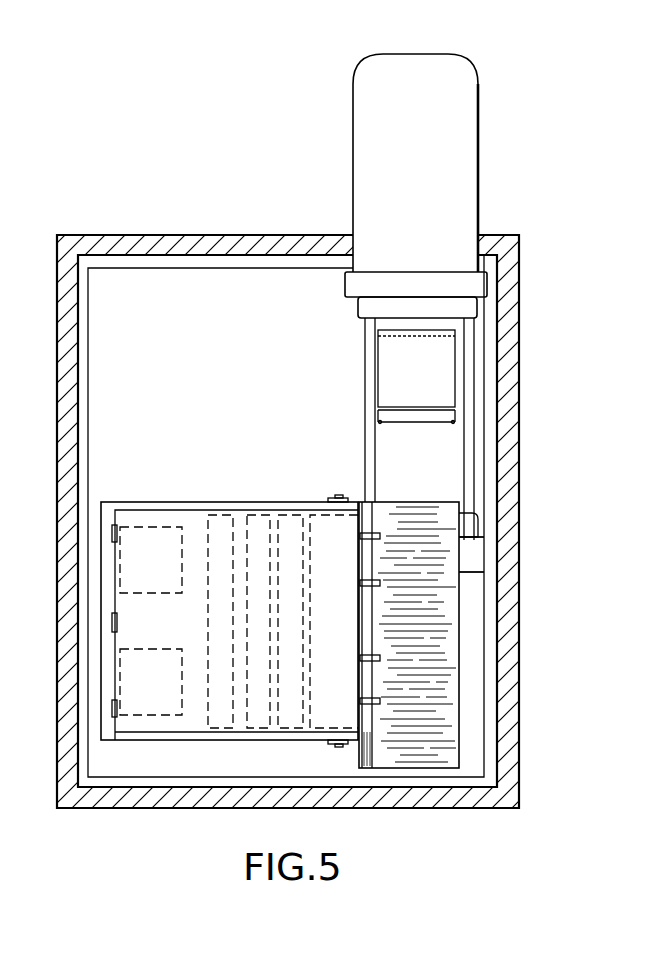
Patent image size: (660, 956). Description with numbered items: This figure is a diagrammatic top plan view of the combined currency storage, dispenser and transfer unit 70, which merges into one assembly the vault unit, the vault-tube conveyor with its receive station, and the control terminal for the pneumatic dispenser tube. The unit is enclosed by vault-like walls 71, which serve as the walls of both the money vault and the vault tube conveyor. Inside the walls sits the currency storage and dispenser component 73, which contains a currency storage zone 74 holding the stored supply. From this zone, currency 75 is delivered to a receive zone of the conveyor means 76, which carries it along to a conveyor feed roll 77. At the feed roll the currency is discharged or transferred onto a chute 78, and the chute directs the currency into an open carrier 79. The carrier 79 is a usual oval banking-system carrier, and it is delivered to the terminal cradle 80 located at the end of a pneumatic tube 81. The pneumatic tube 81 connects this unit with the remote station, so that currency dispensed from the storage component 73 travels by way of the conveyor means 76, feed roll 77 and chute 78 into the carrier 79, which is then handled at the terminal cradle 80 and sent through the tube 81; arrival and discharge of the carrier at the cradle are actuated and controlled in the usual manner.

The storage, dispenser and transfer unit 70 is at (526, 308).
The vault-like walls 71 is at (519, 655).
The currency storage and dispenser component 73 is at (220, 500).
The currency storage zone 74 is at (150, 523).
The currency 75 is at (163, 527).
The conveyor means 76 is at (268, 530).
The conveyor feed roll 77 is at (366, 607).
The chute 78 is at (431, 687).
The carrier 79 is at (464, 372).
The terminal cradle 80 is at (476, 546).
The pneumatic tube 81 is at (460, 130).